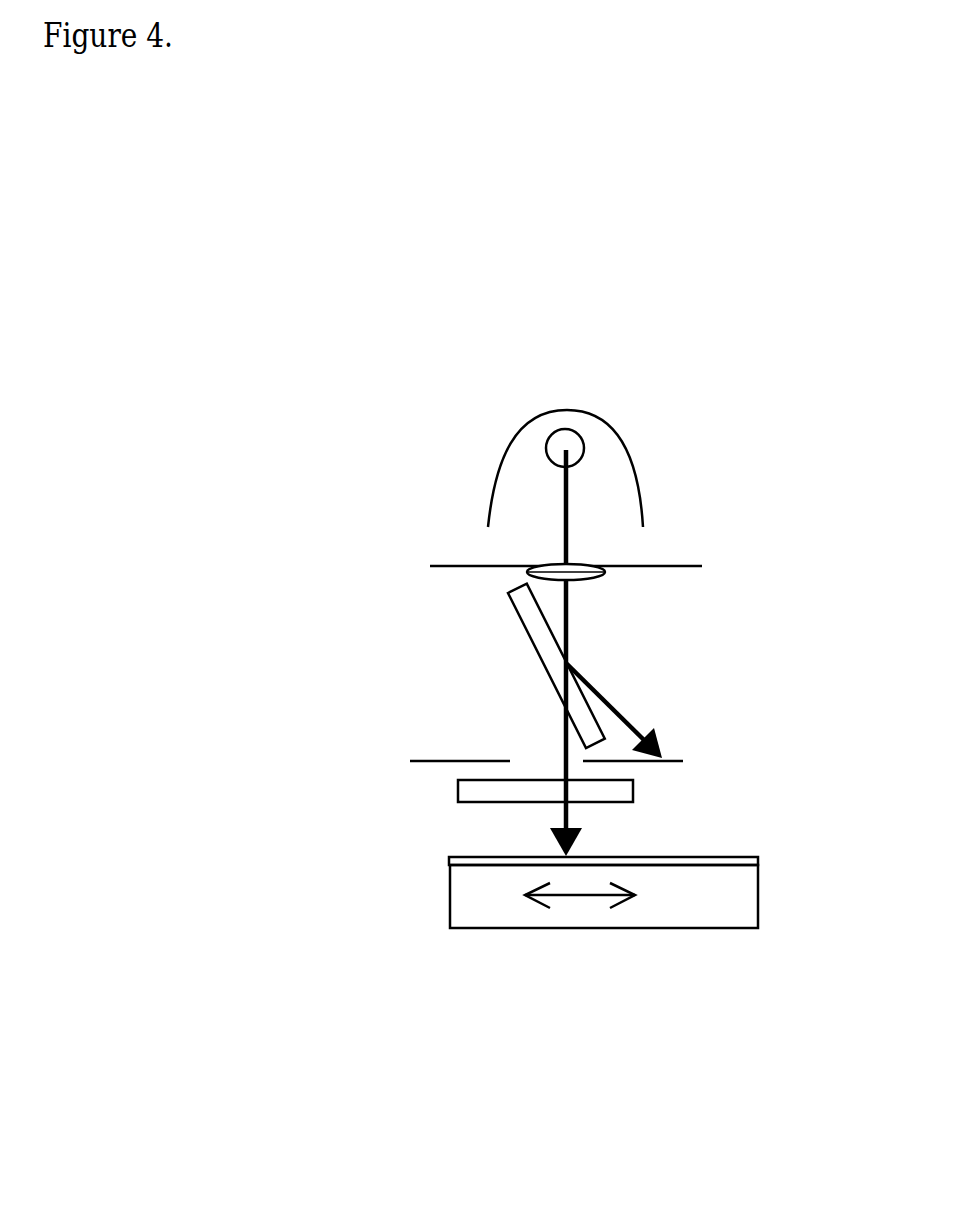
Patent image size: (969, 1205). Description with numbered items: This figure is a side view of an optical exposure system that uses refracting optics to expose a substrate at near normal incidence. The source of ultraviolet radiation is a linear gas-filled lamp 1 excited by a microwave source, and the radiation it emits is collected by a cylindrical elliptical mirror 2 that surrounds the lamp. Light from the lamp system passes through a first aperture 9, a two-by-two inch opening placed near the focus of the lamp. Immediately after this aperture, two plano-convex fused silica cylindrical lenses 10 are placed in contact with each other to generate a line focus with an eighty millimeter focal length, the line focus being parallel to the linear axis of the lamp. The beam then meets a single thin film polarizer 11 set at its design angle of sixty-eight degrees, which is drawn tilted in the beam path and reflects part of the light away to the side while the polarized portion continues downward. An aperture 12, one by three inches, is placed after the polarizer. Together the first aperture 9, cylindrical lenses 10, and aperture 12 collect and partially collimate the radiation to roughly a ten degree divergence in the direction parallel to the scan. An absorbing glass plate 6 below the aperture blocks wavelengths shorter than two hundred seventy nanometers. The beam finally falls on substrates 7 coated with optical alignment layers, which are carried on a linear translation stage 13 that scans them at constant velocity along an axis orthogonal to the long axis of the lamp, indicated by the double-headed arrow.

The linear gas-filled lamp 1 is at (557, 433).
The cylindrical elliptical mirror 2 is at (600, 427).
The first aperture 9 is at (442, 567).
The plano-convex fused silica cylindrical lenses 10 is at (580, 575).
The thin film polarizer 11 is at (520, 600).
The aperture 12 is at (437, 758).
The absorbing glass plate 6 is at (622, 790).
The substrates 7 is at (728, 860).
The linear translation stage 13 is at (528, 905).